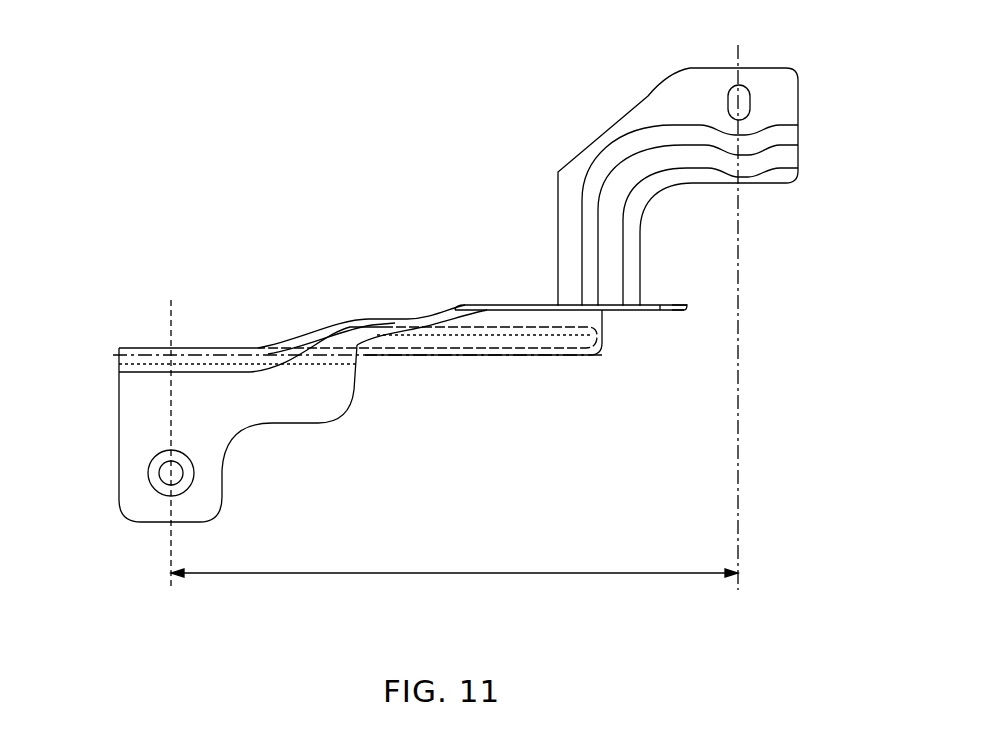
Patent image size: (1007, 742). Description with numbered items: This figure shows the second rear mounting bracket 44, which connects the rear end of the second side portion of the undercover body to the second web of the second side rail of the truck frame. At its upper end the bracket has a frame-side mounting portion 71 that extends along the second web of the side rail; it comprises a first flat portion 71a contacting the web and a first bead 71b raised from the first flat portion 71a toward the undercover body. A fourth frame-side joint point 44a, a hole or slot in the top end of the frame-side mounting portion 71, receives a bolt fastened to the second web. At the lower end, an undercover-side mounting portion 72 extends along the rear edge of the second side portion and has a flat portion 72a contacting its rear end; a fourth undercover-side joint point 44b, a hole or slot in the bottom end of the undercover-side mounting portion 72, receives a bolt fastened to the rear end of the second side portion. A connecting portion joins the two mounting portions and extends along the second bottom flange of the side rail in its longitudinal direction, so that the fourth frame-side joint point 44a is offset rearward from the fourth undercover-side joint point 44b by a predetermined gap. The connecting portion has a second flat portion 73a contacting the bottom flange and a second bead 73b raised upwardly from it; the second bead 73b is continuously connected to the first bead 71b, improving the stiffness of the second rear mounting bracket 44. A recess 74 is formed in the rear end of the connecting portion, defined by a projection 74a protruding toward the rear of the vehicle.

The second rear mounting bracket 44 is at (298, 112).
The frame-side mounting portion 71 is at (606, 117).
The first flat portion 71a is at (658, 92).
The first bead 71b is at (693, 162).
The fourth frame-side joint point 44a is at (747, 105).
The second bead 73b is at (493, 305).
The second flat portion 73a is at (535, 357).
The recess 74 is at (665, 312).
The projection 74a is at (687, 306).
The undercover-side mounting portion 72 is at (111, 377).
The flat portion 72a is at (132, 398).
The fourth undercover-side joint point 44b is at (163, 476).